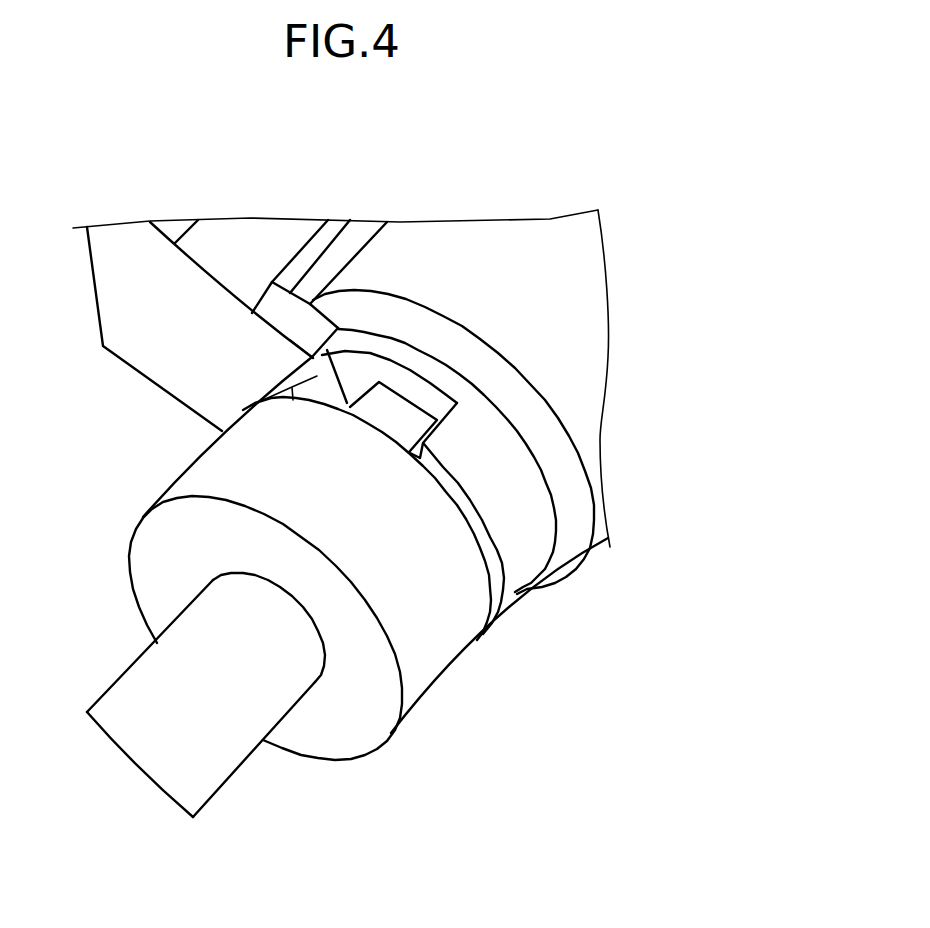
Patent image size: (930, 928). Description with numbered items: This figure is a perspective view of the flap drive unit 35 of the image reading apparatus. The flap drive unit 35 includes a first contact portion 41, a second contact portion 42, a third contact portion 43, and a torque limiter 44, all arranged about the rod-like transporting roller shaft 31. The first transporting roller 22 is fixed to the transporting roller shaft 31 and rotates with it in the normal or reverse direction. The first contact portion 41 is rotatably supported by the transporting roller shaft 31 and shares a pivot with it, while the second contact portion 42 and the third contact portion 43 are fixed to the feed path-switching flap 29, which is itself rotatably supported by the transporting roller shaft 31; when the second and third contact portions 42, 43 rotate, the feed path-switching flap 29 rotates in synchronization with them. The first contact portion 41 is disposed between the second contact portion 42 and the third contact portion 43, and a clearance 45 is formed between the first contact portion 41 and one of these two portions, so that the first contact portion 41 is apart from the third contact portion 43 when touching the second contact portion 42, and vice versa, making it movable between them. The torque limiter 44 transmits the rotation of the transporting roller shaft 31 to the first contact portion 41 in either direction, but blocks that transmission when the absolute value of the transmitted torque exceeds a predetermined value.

The first transporting roller 22 is at (585, 392).
The feed path-switching flap 29 is at (160, 390).
The transporting roller shaft 31 is at (135, 696).
The flap drive unit 35 is at (370, 347).
The first contact portion 41 is at (393, 412).
The second contact portion 42 is at (408, 452).
The third contact portion 43 is at (315, 377).
The torque limiter 44 is at (423, 675).
The clearance 45 is at (354, 364).